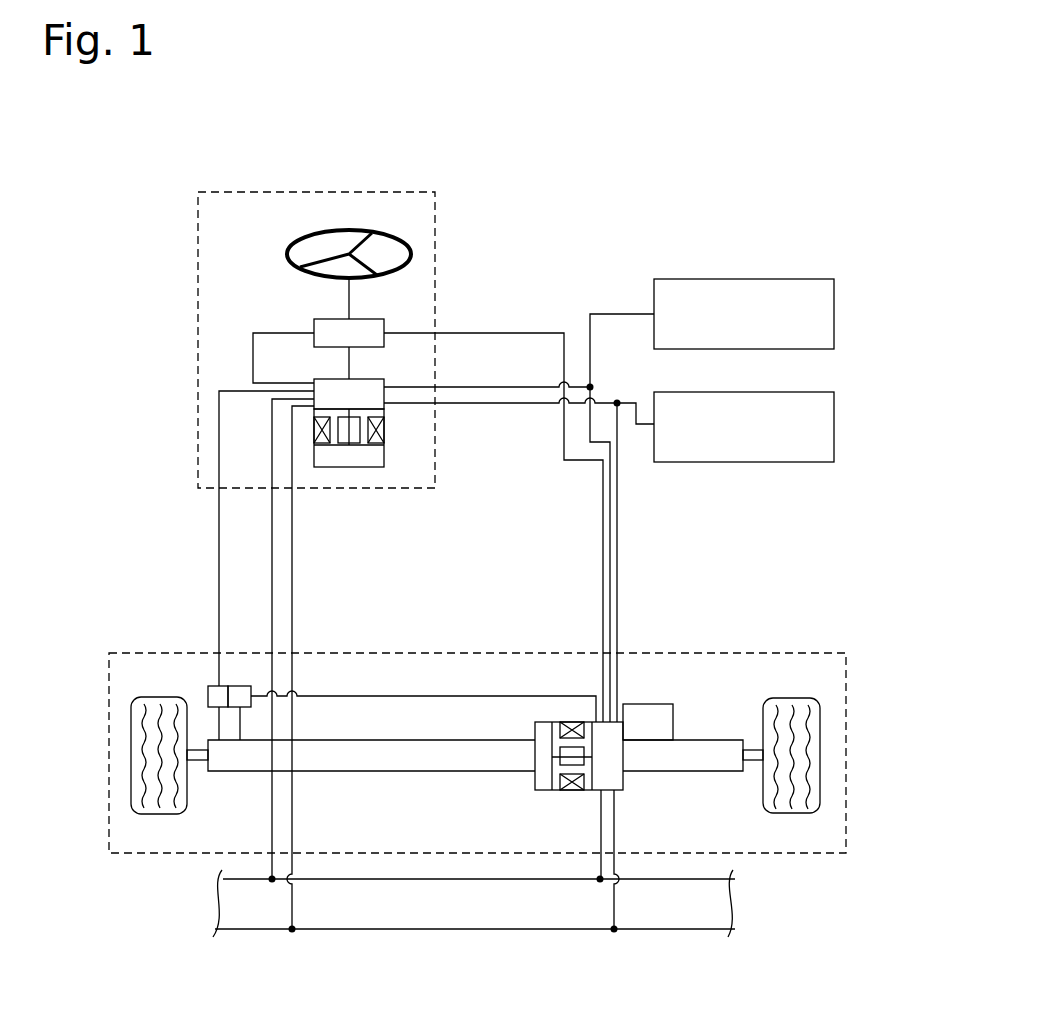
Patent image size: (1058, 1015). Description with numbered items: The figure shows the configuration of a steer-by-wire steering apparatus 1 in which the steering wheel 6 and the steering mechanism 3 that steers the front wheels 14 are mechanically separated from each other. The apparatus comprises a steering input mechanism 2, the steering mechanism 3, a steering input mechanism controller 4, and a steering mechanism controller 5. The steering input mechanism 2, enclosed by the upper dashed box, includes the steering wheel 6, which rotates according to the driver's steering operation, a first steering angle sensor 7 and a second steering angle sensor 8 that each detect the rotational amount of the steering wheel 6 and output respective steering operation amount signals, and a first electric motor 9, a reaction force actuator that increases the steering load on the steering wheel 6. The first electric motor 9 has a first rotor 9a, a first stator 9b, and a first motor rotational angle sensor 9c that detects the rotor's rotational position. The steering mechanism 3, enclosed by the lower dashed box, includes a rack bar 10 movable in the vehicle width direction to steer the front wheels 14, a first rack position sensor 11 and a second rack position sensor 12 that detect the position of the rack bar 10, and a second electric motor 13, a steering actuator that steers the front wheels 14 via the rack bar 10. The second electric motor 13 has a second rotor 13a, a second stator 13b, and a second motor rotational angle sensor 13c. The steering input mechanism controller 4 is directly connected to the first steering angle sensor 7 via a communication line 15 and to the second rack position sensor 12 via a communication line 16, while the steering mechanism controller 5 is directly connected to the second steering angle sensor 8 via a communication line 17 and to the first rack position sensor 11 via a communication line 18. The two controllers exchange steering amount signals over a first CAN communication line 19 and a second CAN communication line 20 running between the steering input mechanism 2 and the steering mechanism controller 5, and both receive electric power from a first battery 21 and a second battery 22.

The steering apparatus 1 is at (752, 190).
The steering input mechanism 2 is at (198, 243).
The steering mechanism 3 is at (805, 652).
The steering input mechanism controller 4 is at (372, 386).
The steering mechanism controller 5 is at (570, 777).
The steering wheel 6 is at (410, 248).
The first steering angle sensor 7 is at (326, 328).
The second steering angle sensor 8 is at (378, 325).
The first electric motor 9 is at (395, 478).
The first rotor 9a is at (355, 447).
The first stator 9b is at (375, 447).
The first motor rotational angle sensor 9c is at (323, 458).
The rack bar 10 is at (198, 763).
The first rack position sensor 11 is at (239, 686).
The second rack position sensor 12 is at (212, 686).
The second electric motor 13 is at (521, 777).
The second rotor 13a is at (555, 759).
The second stator 13b is at (555, 783).
The second motor rotational angle sensor 13c is at (542, 732).
The front wheels 14 is at (131, 755).
The communication line 15 is at (248, 359).
The communication line 16 is at (218, 562).
The communication line 17 is at (602, 560).
The communication line 18 is at (410, 695).
The first CAN communication line 19 is at (387, 880).
The second CAN communication line 20 is at (472, 930).
The first battery 21 is at (808, 279).
The second battery 22 is at (808, 392).